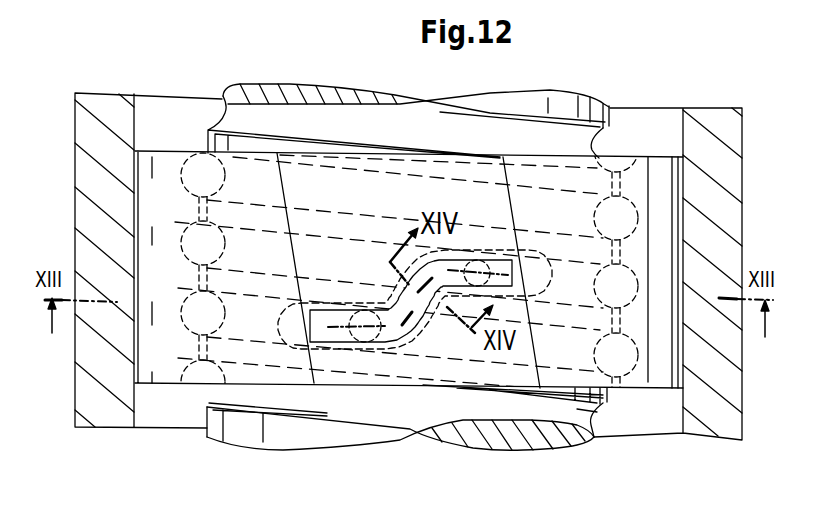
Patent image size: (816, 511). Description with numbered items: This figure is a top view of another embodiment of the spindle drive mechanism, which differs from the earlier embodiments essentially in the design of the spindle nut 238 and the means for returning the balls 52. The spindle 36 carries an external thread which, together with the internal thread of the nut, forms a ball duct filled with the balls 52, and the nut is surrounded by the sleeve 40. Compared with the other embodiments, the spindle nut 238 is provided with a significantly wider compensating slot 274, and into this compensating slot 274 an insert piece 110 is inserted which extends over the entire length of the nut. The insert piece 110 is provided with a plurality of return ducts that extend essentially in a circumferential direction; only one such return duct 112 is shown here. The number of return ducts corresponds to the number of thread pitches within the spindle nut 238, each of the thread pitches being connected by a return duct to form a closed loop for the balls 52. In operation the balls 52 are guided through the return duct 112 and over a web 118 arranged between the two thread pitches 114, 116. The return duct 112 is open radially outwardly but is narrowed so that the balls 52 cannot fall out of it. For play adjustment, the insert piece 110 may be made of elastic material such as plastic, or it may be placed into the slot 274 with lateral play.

The sleeve 40 is at (118, 420).
The spindle 36 is at (318, 438).
The insert piece 110 is at (370, 157).
The compensating slot 274 is at (283, 184).
The spindle nut 238 is at (648, 157).
The thread pitch 114 is at (196, 213).
The web 118 is at (198, 279).
The thread pitch 116 is at (198, 349).
The balls 52 is at (369, 343).
The return duct 112 is at (427, 296).